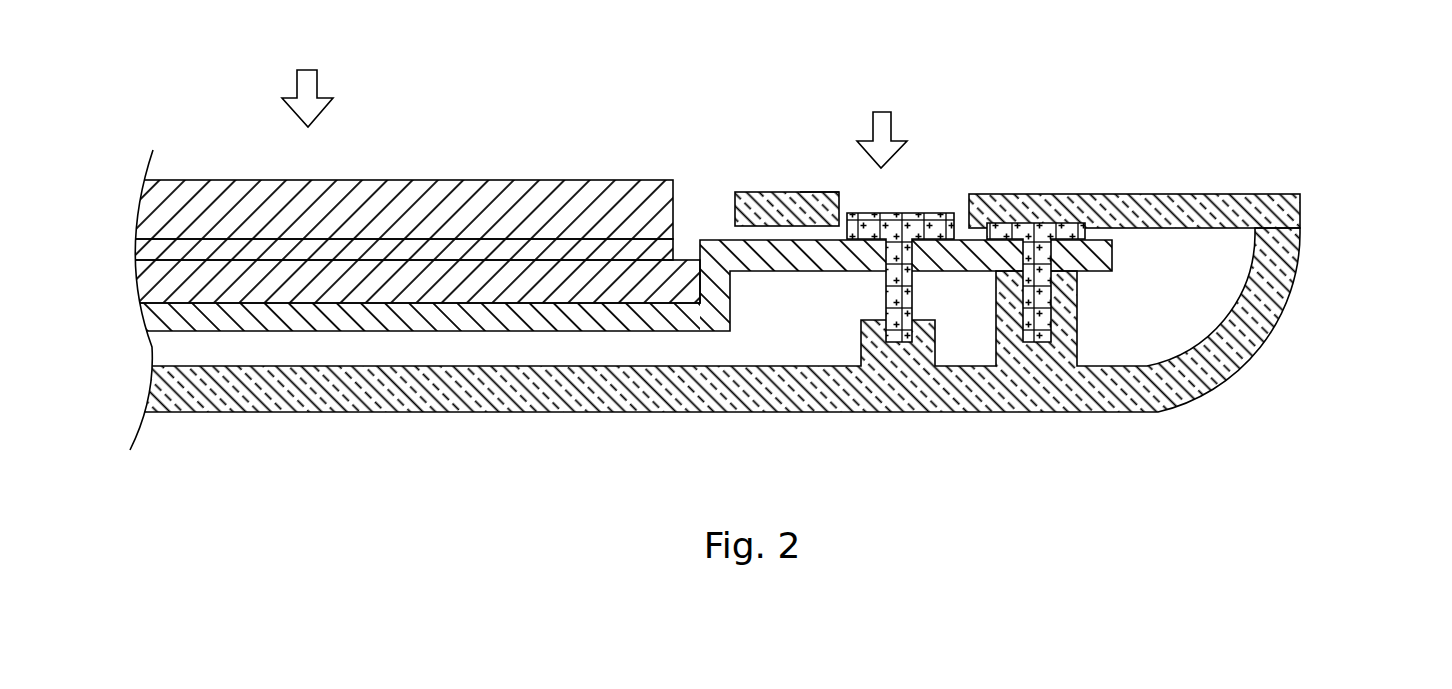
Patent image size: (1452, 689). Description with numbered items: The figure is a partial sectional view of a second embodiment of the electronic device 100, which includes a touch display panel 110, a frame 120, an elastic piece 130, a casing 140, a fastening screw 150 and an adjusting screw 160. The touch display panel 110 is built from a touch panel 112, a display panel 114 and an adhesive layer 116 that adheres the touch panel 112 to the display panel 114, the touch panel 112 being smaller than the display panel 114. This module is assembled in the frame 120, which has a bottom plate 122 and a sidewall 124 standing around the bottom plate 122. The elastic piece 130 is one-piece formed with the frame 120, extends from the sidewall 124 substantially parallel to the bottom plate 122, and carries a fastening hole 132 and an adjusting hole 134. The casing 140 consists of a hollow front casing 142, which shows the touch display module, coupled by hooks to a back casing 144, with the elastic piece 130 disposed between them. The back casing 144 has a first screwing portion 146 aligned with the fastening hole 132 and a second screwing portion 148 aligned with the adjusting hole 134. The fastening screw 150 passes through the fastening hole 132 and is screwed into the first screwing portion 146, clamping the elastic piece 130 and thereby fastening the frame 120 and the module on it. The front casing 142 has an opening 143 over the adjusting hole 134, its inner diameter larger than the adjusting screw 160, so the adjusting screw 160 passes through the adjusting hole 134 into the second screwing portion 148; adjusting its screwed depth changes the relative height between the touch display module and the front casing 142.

The electronic device 100 is at (150, 127).
The touch display panel 110 is at (410, 172).
The touch panel 112 is at (490, 225).
The adhesive layer 116 is at (560, 250).
The display panel 114 is at (637, 280).
The frame 120 is at (616, 376).
The bottom plate 122 is at (577, 318).
The sidewall 124 is at (718, 275).
The elastic piece 130 is at (770, 240).
The fastening hole 132 is at (1057, 258).
The adjusting hole 134 is at (917, 258).
The casing 140 is at (782, 334).
The front casing 142 is at (1285, 208).
The opening 143 is at (838, 205).
The back casing 144 is at (1283, 262).
The first screwing portion 146 is at (1078, 300).
The second screwing portion 148 is at (863, 322).
The fastening screw 150 is at (1054, 222).
The adjusting screw 160 is at (915, 208).